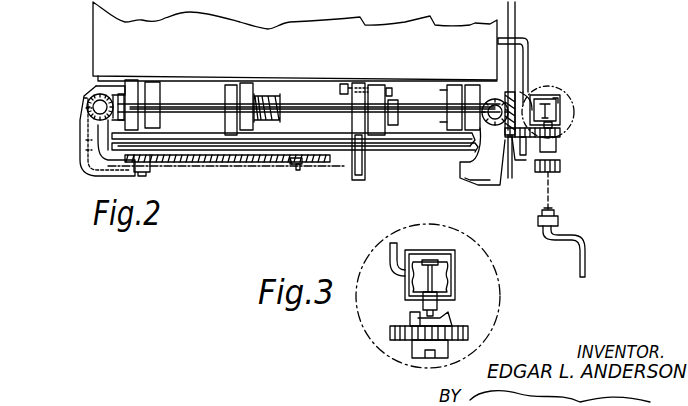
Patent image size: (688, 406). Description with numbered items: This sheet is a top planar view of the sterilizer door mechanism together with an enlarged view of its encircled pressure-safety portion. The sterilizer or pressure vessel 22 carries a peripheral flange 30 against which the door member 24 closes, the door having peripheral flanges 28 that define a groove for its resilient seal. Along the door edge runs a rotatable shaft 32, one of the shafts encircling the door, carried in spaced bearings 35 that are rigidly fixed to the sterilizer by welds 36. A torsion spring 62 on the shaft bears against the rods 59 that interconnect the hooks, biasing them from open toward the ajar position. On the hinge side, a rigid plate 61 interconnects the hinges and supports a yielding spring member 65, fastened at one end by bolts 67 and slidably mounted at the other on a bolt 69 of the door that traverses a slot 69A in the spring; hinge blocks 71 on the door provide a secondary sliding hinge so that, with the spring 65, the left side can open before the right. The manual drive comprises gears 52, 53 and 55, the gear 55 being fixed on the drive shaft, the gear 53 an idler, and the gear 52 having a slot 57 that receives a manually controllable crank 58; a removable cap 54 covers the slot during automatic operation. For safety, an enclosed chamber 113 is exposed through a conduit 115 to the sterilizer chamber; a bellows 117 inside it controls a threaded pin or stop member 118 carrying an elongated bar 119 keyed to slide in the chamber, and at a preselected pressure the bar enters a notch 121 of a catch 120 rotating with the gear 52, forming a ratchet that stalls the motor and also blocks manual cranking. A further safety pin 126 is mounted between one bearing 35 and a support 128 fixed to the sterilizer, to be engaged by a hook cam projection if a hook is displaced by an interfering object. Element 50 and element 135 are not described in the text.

In FIG. 2, the sterilizer or pressure vessel 22 is at (296, 36).
In FIG. 2, the door member 24 is at (444, 160).
In FIG. 2, the peripheral flanges 28 is at (492, 143).
In FIG. 2, the peripheral flange 30 is at (212, 142).
In FIG. 2, the rotatable shaft 32 is at (446, 92).
In FIG. 2, the bearings 35 is at (136, 80).
In FIG. 2, the welds 36 is at (150, 82).
In FIG. 2, the valve fitting 50 is at (536, 95).
In FIG. 2, the manually controllable gear 52 is at (562, 130).
In FIG. 3, the manually controllable gear 52 is at (400, 340).
In FIG. 2, the intermediate idler gear 53 is at (562, 108).
In FIG. 2, the removable cap or cover 54 is at (556, 165).
In FIG. 2, the manually controllable gear 55 is at (536, 140).
In FIG. 2, the slot 57 is at (558, 143).
In FIG. 2, the manually controllable crank 58 is at (562, 236).
In FIG. 2, the rods 59 is at (376, 160).
In FIG. 2, the rigid plate 61 is at (80, 124).
In FIG. 2, the torsion spring 62 is at (266, 100).
In FIG. 2, the yielding spring member 65 is at (188, 165).
In FIG. 2, the bolts 67 is at (82, 146).
In FIG. 2, the bolt 69 is at (304, 166).
In FIG. 2, the slot 69A is at (294, 165).
In FIG. 2, the hinge blocks 71 is at (152, 166).
In FIG. 3, the enclosed chamber 113 is at (455, 262).
In FIG. 2, the conduit 115 is at (526, 40).
In FIG. 3, the conduit 115 is at (392, 246).
In FIG. 3, the bellows 117 is at (450, 286).
In FIG. 3, the threaded pin or stop member 118 is at (428, 260).
In FIG. 3, the elongated bar 119 is at (420, 303).
In FIG. 3, the catch 120 is at (446, 318).
In FIG. 3, the notch 121 is at (403, 364).
In FIG. 2, the pin 126 is at (389, 90).
In FIG. 2, the support 128 is at (348, 84).
In FIG. 2, the slide block 135 is at (376, 80).